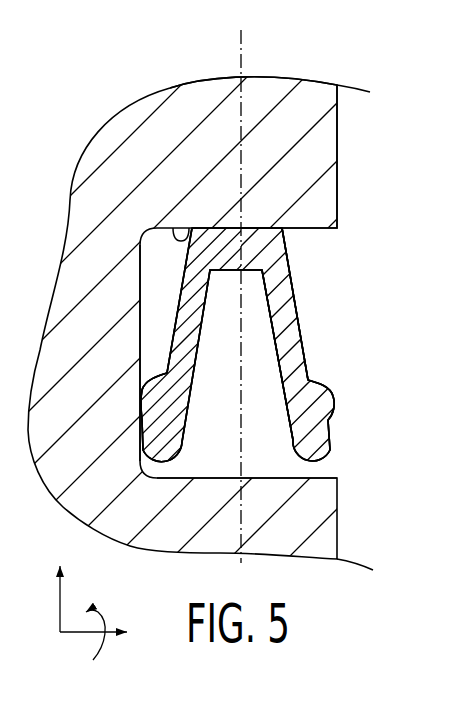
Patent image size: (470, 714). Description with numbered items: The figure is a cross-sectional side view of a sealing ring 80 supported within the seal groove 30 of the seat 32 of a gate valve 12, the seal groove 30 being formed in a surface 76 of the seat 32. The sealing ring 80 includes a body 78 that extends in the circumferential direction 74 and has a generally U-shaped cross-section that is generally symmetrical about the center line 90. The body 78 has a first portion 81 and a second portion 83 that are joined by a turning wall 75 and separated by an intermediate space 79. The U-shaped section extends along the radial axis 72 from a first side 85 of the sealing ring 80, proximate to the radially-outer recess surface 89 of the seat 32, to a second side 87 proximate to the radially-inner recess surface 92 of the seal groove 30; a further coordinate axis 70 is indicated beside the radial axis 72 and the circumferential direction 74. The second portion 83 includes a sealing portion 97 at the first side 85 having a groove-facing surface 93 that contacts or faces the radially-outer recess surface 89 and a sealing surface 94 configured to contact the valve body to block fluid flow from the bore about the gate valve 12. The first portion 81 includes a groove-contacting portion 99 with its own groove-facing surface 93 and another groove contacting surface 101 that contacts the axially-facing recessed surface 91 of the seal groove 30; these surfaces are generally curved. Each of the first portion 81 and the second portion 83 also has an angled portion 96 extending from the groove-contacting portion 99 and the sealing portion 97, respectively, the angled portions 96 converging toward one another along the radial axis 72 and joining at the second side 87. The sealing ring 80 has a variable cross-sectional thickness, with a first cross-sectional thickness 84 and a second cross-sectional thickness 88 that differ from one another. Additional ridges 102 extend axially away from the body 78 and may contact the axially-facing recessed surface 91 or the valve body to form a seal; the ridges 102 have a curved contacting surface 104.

The gate valve 12 is at (357, 71).
The seal groove 30 is at (316, 248).
The seat 32 is at (331, 97).
The radial axis 70 is at (91, 637).
The radial axis 72 is at (62, 600).
The circumferential direction 74 is at (103, 623).
The turning wall 75 is at (250, 229).
The surface 76 is at (338, 140).
The body 78 is at (290, 278).
The intermediate space 79 is at (274, 446).
The sealing ring 80 is at (205, 390).
The first portion 81 is at (178, 320).
The second portion 83 is at (294, 308).
The first cross-sectional thickness 84 is at (253, 413).
The first side 85 is at (312, 483).
The second side 87 is at (273, 211).
The second cross-sectional thickness 88 is at (237, 363).
The radially-outer recess surface 89 is at (216, 478).
The center line 90 is at (240, 48).
The axially-facing recessed surface 91 is at (141, 320).
The radially-inner recess surface 92 is at (180, 229).
The groove-facing surface 93 is at (155, 468).
The sealing surface 94 is at (331, 460).
The angled portions 96 is at (262, 274).
The sealing portion 97 is at (331, 452).
The groove-contacting portion 99 is at (150, 463).
The groove contacting surface 101 is at (140, 458).
The ridges 102 is at (147, 398).
The curved contacting surface 104 is at (137, 407).